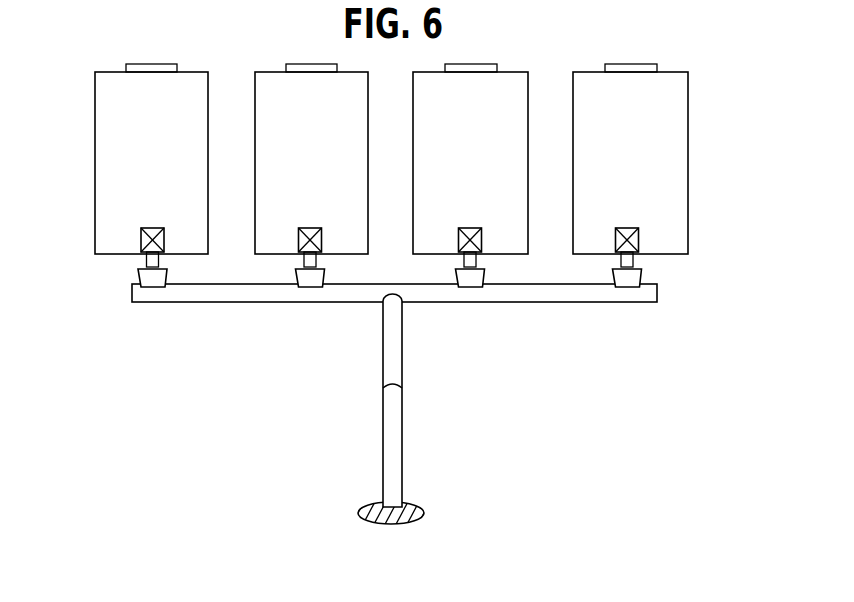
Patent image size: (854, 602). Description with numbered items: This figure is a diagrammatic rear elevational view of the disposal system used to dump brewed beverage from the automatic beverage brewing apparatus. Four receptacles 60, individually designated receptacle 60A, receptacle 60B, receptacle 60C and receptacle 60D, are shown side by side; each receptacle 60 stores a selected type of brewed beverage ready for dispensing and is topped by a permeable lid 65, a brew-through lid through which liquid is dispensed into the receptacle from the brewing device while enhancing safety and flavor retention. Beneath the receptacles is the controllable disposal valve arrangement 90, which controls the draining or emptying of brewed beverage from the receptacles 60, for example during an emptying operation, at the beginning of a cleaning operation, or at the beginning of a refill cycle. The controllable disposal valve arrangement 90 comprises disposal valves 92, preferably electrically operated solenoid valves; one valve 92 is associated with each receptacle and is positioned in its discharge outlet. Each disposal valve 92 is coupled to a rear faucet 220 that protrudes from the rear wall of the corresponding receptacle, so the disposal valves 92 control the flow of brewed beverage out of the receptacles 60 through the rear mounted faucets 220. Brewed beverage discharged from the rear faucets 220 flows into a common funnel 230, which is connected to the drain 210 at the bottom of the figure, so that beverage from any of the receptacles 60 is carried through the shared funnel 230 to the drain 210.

The receptacle 60 is at (701, 118).
The receptacle 60A is at (630, 139).
The receptacle 60B is at (503, 162).
The receptacle 60C is at (340, 162).
The receptacle 60D is at (180, 162).
The permeable lid 65 is at (645, 65).
The controllable disposal valve arrangement 90 is at (141, 386).
The disposal valve 92 is at (141, 238).
The rear faucet 220 is at (160, 265).
The common funnel 230 is at (396, 437).
The drain 210 is at (426, 515).